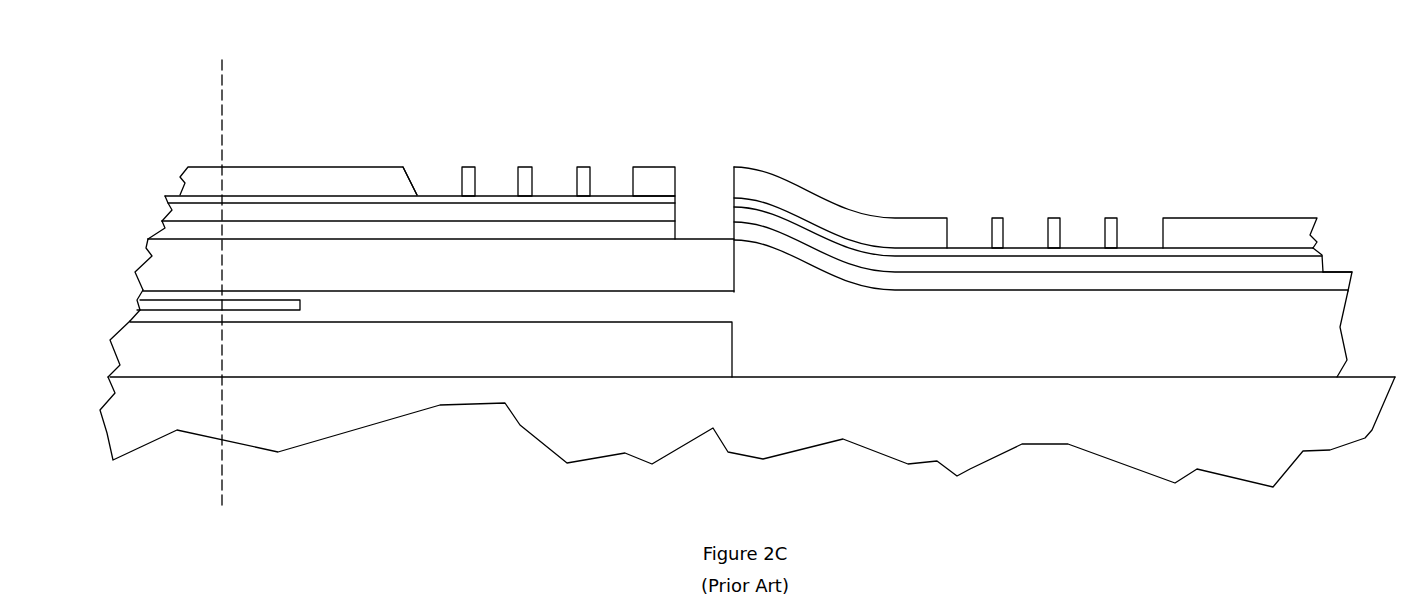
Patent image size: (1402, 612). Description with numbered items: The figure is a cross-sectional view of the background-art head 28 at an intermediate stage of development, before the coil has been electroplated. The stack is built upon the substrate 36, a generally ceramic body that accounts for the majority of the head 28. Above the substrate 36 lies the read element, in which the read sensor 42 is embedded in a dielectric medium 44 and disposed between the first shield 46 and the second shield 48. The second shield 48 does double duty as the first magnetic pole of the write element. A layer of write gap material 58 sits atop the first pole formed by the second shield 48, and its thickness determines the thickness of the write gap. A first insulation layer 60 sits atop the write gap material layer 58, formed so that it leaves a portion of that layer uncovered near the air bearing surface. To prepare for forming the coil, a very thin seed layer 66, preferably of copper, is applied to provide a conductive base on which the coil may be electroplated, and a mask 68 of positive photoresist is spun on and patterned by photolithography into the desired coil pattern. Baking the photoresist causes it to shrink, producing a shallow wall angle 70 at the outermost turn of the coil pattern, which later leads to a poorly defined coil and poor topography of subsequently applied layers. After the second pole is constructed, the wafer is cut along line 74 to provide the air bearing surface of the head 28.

The head 28 is at (752, 77).
The substrate 36 is at (357, 417).
The read sensor 42 is at (302, 303).
The dielectric medium 44 is at (583, 306).
The first shield 46 is at (427, 352).
The second shield 48 is at (448, 266).
The write gap material layer 58 is at (625, 266).
The first insulation layer 60 is at (238, 213).
The seed layer 66 is at (295, 202).
The mask 68 is at (343, 185).
The shallow wall angle 70 is at (413, 193).
The line 74 is at (220, 100).